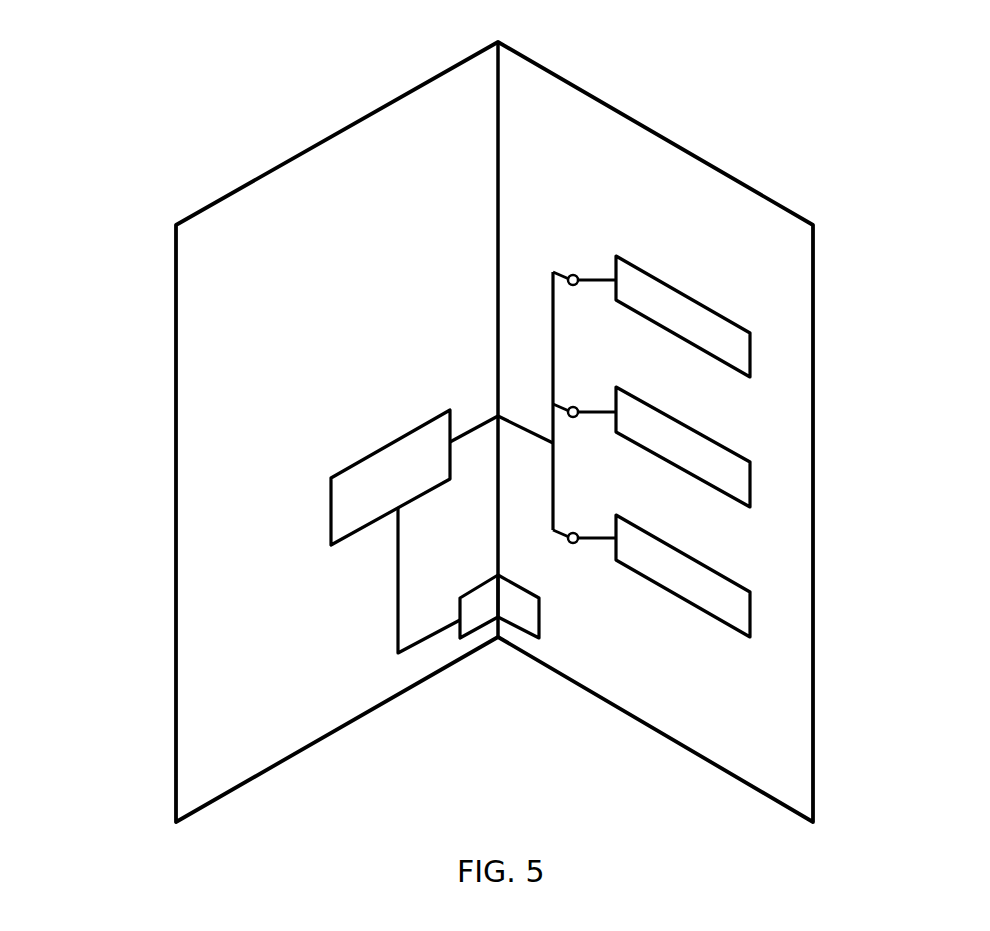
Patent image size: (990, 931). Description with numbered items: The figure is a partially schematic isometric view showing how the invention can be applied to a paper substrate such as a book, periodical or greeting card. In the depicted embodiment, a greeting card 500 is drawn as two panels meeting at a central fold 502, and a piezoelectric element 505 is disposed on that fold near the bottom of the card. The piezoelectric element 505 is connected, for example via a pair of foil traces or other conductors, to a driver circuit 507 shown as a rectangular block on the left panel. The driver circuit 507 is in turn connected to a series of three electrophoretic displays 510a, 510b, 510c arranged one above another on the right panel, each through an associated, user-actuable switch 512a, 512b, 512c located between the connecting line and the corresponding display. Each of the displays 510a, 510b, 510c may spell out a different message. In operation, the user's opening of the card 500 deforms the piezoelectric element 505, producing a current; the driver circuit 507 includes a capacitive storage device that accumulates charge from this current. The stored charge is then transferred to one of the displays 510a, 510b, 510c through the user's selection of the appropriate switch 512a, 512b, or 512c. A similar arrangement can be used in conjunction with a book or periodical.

The greeting card 500 is at (843, 312).
The central fold 502 is at (497, 232).
The piezoelectric element 505 is at (518, 610).
The driver circuit 507 is at (375, 468).
The electrophoretic display 510a is at (688, 297).
The electrophoretic display 510b is at (687, 423).
The electrophoretic display 510c is at (687, 553).
The user-actuable switch 512a is at (573, 275).
The user-actuable switch 512b is at (573, 407).
The user-actuable switch 512c is at (573, 543).